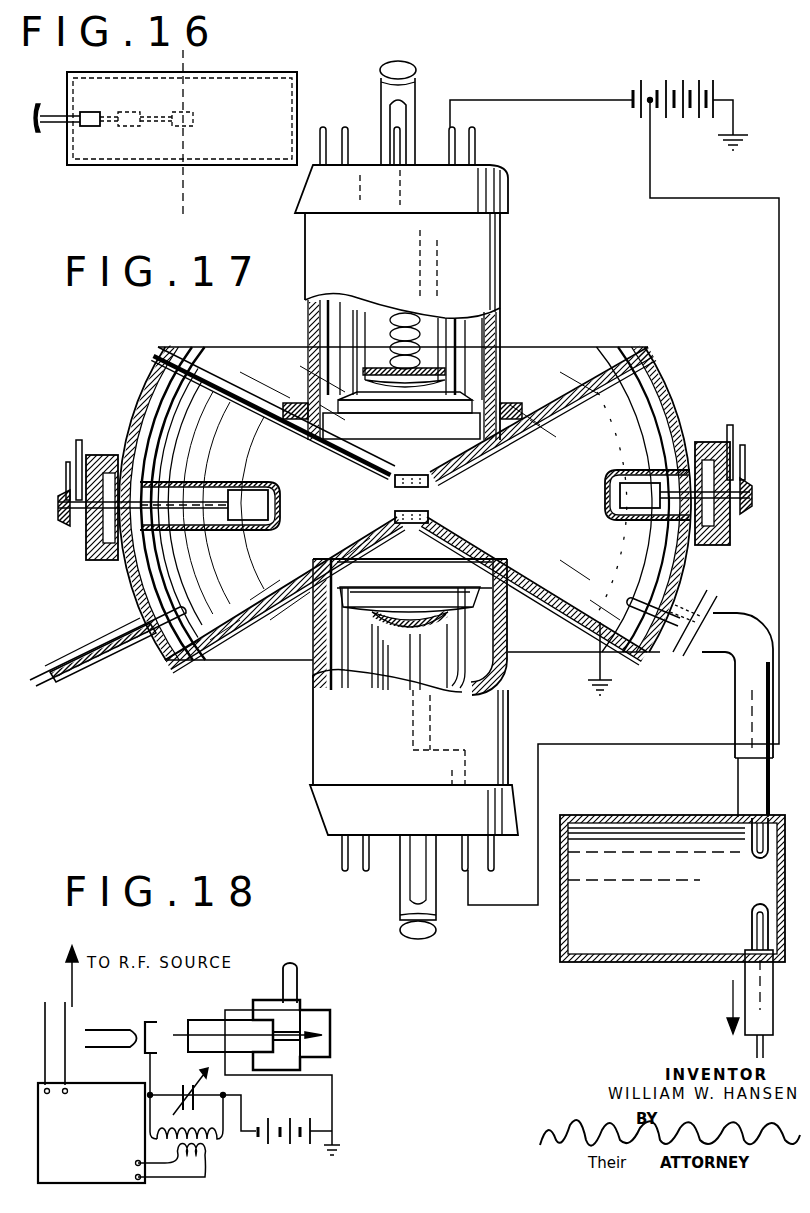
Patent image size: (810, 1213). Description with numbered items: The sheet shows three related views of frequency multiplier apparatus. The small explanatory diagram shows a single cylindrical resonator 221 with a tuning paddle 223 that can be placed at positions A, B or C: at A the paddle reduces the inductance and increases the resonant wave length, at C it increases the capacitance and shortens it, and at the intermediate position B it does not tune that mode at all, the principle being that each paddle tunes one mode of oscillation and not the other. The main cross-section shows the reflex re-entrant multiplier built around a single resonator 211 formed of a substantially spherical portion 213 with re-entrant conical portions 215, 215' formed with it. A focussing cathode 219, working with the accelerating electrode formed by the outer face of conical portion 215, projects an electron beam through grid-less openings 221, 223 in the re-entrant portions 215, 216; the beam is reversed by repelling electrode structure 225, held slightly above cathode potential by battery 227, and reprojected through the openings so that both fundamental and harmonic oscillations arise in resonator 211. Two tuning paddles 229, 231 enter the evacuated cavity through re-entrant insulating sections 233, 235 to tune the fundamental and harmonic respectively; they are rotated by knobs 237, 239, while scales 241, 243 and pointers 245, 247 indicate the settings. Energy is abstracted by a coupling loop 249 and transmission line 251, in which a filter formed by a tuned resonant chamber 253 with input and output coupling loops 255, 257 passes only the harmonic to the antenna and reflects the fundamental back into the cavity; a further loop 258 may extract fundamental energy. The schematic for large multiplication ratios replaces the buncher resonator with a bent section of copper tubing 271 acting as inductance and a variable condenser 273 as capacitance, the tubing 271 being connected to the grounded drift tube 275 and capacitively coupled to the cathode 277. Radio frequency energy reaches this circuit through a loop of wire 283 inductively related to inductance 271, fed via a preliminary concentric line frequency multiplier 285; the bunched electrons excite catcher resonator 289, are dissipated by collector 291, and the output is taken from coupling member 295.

In FIG. 17, the resonator 211 is at (660, 368).
In FIG. 17, the spherical portion 213 is at (690, 407).
In FIG. 17, the re-entrant conical portion 215 is at (403, 398).
In FIG. 17, the re-entrant conical portion 215' is at (180, 661).
In FIG. 17, the re-entrant portion 216 is at (592, 594).
In FIG. 17, the focussing cathode 219 is at (462, 333).
In FIG. 16, the grid-less opening 221 is at (259, 72).
In FIG. 17, the grid-less opening 221 is at (426, 486).
In FIG. 16, the grid-less opening 223 is at (92, 126).
In FIG. 17, the grid-less opening 223 is at (430, 514).
In FIG. 17, the repelling electrode structure 225 is at (312, 668).
In FIG. 17, the battery 227 is at (634, 88).
In FIG. 17, the tuning paddle 229 is at (265, 492).
In FIG. 17, the tuning paddle 231 is at (630, 485).
In FIG. 17, the re-entrant insulating section 233 is at (206, 483).
In FIG. 17, the re-entrant insulating section 235 is at (607, 496).
In FIG. 17, the knob 237 is at (60, 492).
In FIG. 17, the knob 239 is at (752, 510).
In FIG. 17, the scale 241 is at (80, 440).
In FIG. 17, the scale 243 is at (731, 428).
In FIG. 17, the pointer 245 is at (66, 462).
In FIG. 17, the pointer 247 is at (745, 450).
In FIG. 17, the coupling loop 249 is at (634, 600).
In FIG. 17, the transmission line 251 is at (710, 607).
In FIG. 17, the tuned resonant chamber 253 is at (578, 942).
In FIG. 17, the coupling loop 255 is at (752, 850).
In FIG. 17, the coupling loop 257 is at (752, 916).
In FIG. 17, the coupling loop 258 is at (189, 606).
In FIG. 18, the bent section of copper tubing 271 is at (210, 1140).
In FIG. 18, the variable condenser 273 is at (180, 1092).
In FIG. 18, the drift tube 275 is at (220, 1020).
In FIG. 18, the cathode 277 is at (148, 1022).
In FIG. 18, the loop of wire 283 is at (205, 1180).
In FIG. 18, the concentric line frequency multiplier 285 is at (90, 1083).
In FIG. 18, the catcher resonator 289 is at (325, 1052).
In FIG. 18, the collector 291 is at (332, 1022).
In FIG. 18, the coupling member 295 is at (300, 985).